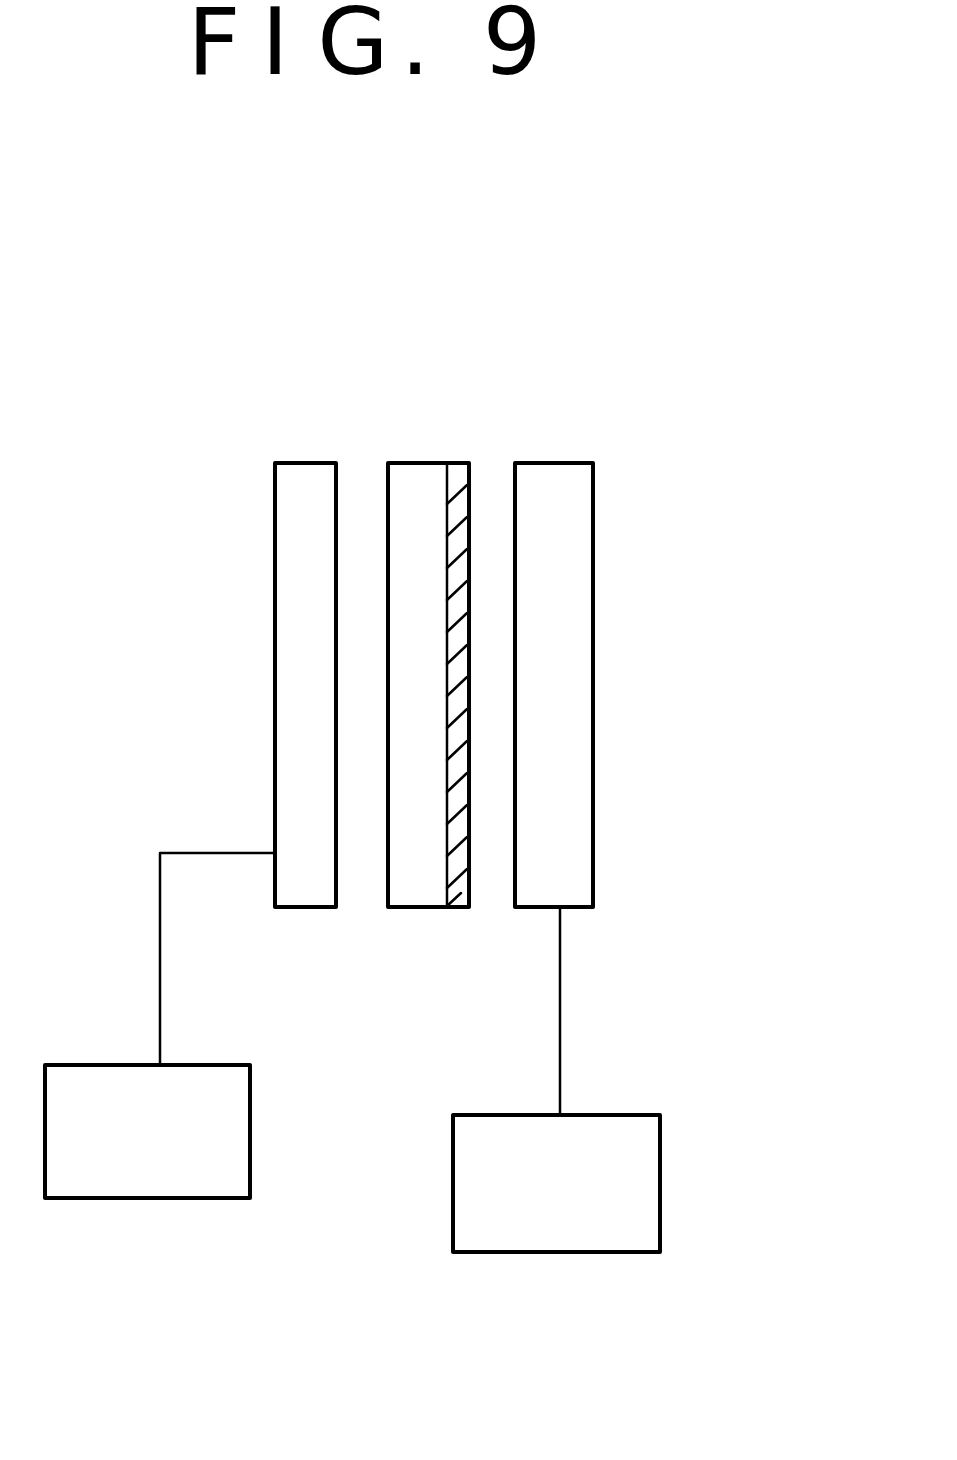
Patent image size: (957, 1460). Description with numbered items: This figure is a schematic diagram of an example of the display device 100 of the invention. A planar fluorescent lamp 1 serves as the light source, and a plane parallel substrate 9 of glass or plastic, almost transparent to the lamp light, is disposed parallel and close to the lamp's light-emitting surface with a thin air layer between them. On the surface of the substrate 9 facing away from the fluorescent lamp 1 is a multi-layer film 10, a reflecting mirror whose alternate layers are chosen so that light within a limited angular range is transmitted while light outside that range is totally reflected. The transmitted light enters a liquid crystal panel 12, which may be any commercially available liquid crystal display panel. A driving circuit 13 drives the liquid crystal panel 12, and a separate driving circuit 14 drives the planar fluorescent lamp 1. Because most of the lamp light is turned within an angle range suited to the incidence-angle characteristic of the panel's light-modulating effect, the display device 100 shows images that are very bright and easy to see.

The display device 100 is at (458, 437).
The planar fluorescent lamp 1 is at (305, 907).
The plane parallel substrate 9 is at (420, 907).
The multi-layer film 10 is at (457, 907).
The liquid crystal panel 12 is at (580, 907).
The driving circuit for the liquid crystal panel 13 is at (660, 1195).
The driving circuit for the planar fluorescent lamp 14 is at (157, 1198).